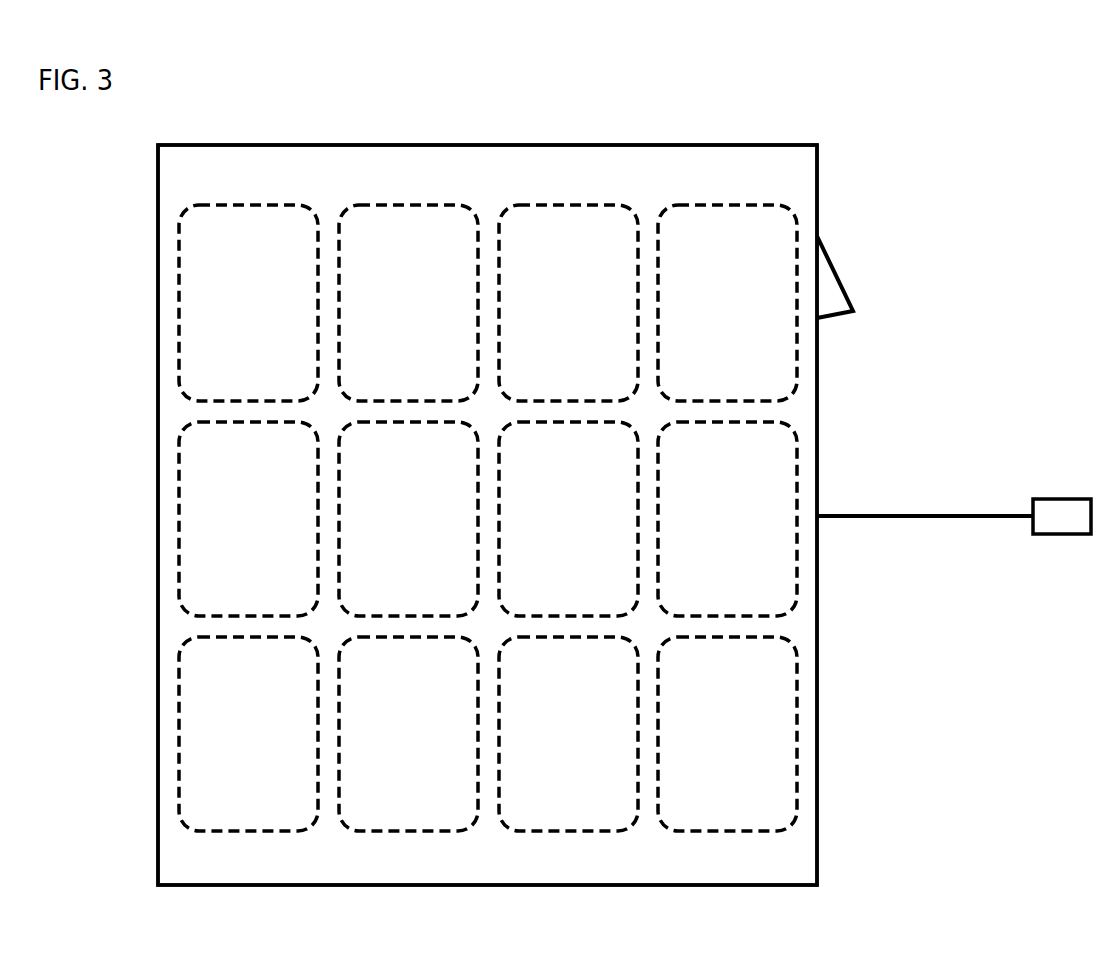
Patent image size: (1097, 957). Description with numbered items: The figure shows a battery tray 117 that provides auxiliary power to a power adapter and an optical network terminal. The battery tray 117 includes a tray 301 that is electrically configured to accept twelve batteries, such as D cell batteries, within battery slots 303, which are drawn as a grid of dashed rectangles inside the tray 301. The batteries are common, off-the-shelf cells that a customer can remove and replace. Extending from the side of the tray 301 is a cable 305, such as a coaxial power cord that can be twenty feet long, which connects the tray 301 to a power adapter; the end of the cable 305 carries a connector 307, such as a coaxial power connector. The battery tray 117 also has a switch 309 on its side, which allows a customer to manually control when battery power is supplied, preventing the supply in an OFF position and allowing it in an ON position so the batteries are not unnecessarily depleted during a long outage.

The battery tray 117 is at (347, 82).
The tray 301 is at (488, 145).
The battery slots 303 is at (488, 518).
The cable 305 is at (925, 513).
The connector 307 is at (1060, 498).
The switch 309 is at (840, 272).